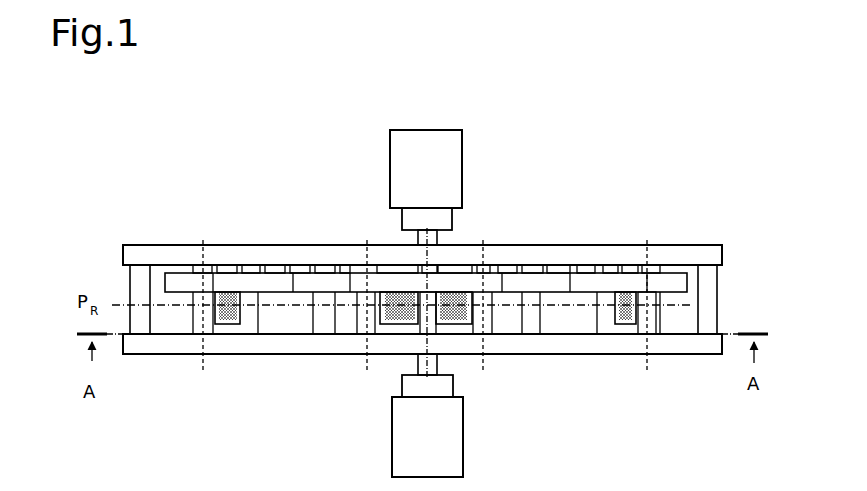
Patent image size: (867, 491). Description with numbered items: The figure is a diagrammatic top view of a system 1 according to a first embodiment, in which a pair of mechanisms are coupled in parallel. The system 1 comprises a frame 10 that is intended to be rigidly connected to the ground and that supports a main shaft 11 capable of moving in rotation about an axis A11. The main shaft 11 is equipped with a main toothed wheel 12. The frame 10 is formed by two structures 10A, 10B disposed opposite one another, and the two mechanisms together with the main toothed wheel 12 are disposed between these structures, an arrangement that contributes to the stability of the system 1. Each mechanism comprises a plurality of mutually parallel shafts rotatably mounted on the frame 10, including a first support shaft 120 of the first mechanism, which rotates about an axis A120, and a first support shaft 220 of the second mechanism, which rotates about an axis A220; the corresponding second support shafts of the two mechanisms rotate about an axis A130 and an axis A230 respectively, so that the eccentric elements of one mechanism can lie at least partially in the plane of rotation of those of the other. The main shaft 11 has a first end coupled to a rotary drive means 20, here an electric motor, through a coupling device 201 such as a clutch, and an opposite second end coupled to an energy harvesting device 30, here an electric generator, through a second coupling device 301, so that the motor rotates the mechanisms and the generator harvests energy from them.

The system 1 is at (420, 297).
The frame 10 is at (417, 304).
The structure of the frame 10A is at (153, 257).
The structure of the frame 10B is at (419, 389).
The main shaft 11 is at (438, 360).
The main toothed wheel 12 is at (362, 283).
The rotary drive means 20 is at (371, 180).
The coupling device 201 is at (400, 218).
The energy harvesting device 30 is at (474, 426).
The coupling device 301 is at (453, 390).
The first support shaft 120 is at (198, 337).
The first support shaft 220 is at (645, 335).
The axis of rotation of the first support shaft A120 is at (219, 295).
The axis of rotation of the second support shaft A130 is at (368, 356).
The axis of rotation of the main shaft A11 is at (417, 356).
The axis of rotation of the second support shaft A230 is at (484, 248).
The axis of rotation of the first support shaft A220 is at (643, 284).